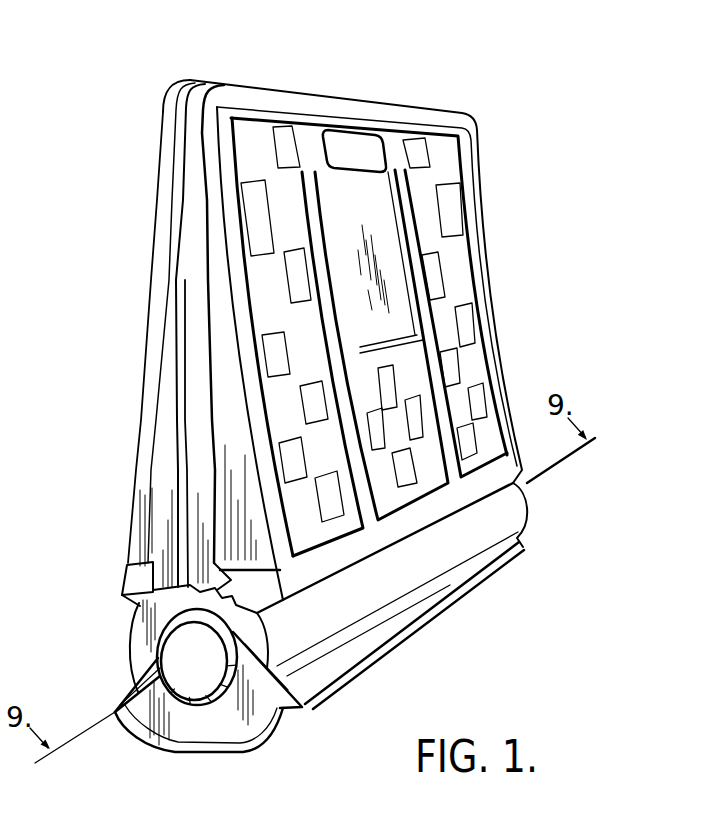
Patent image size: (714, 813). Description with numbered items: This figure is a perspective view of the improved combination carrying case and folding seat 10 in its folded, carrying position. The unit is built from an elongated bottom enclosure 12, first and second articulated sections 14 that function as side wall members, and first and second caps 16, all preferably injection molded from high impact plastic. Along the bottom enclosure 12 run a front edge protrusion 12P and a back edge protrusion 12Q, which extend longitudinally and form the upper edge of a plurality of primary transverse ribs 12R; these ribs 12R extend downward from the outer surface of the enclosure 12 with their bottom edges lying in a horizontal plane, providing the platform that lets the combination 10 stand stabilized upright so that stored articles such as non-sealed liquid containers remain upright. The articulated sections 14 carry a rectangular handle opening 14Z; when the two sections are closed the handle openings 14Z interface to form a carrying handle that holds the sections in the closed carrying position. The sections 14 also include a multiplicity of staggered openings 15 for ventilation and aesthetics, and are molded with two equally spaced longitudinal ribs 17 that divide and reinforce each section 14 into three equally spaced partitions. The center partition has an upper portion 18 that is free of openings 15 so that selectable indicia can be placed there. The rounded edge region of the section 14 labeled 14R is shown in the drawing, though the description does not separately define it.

The combination carrying case and folding seat 10 is at (535, 78).
The elongated bottom enclosure 12 is at (520, 504).
The front edge protrusion 12P is at (390, 633).
The back edge protrusion 12Q is at (118, 695).
The primary transverse ribs 12R is at (138, 735).
The first and second articulated section 14 is at (457, 269).
The housing ribs 14R is at (202, 92).
The handle opening 14Z is at (348, 142).
The staggered openings 15 is at (472, 368).
The first and second cap 16 is at (182, 652).
The longitudinal ribs 17 is at (400, 346).
The upper portion 18 is at (377, 220).